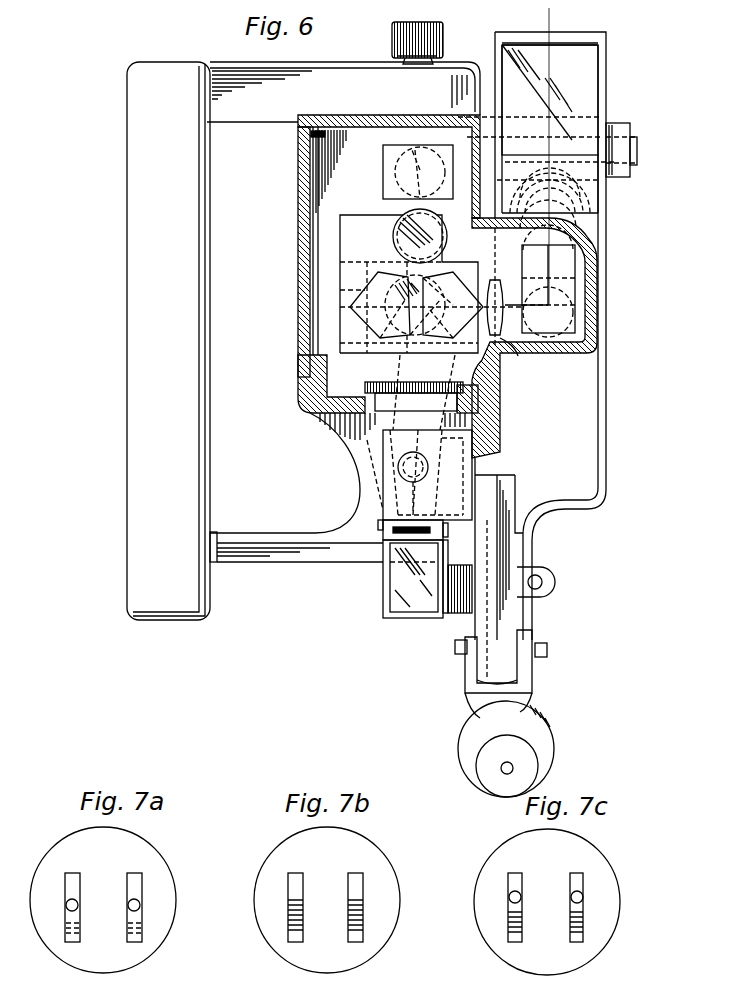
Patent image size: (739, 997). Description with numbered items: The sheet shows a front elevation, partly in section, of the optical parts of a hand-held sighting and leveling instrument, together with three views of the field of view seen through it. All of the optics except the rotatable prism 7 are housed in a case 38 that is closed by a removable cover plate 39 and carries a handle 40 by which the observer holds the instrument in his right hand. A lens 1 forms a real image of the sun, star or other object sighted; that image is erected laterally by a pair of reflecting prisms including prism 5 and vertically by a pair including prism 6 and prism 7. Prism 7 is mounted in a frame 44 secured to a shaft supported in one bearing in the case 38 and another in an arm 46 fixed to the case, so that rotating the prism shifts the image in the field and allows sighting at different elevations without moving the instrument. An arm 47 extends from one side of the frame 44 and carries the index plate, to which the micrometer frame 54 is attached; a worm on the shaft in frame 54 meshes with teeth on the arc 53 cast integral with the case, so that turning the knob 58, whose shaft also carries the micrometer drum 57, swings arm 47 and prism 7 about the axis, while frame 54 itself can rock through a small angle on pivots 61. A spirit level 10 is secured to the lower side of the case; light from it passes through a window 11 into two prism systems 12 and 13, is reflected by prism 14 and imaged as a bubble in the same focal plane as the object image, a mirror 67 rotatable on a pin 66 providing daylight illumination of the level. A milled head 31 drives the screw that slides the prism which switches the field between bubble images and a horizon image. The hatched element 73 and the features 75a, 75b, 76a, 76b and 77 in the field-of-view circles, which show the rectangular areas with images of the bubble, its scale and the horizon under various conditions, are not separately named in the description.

In FIG. 6, the lens 1 is at (515, 355).
In FIG. 6, the reflecting prism 5 is at (562, 318).
In FIG. 6, the reflecting prism 6 is at (563, 273).
In FIG. 6, the reflecting prism 7 is at (585, 85).
In FIG. 6, the spirit level 10 is at (410, 467).
In FIG. 6, the window 11 is at (405, 383).
In FIG. 6, the prism system 12 is at (455, 270).
In FIG. 6, the prism system 13 is at (340, 283).
In FIG. 6, the prism 14 is at (383, 170).
In FIG. 6, the milled head 31 is at (445, 34).
In FIG. 6, the case 38 is at (347, 73).
In FIG. 6, the removable cover plate 39 is at (300, 318).
In FIG. 6, the handle 40 is at (180, 385).
In FIG. 6, the frame 44 is at (606, 52).
In FIG. 6, the arm 46 is at (630, 136).
In FIG. 6, the arm 47 is at (600, 505).
In FIG. 6, the arc 53 is at (505, 625).
In FIG. 6, the micrometer frame 54 is at (530, 690).
In FIG. 6, the micrometer drum 57 is at (530, 728).
In FIG. 6, the knob 58 is at (528, 768).
In FIG. 6, the pivots 61 is at (455, 648).
In FIG. 6, the pin 66 is at (380, 527).
In FIG. 6, the mirror 67 is at (393, 600).
In FIG. 6, the reflector 73 is at (600, 197).
In FIG. 7A, the left slot 75a is at (73, 870).
In FIG. 7B, the left slot 75a is at (295, 870).
In FIG. 7C, the left slot 75a is at (518, 850).
In FIG. 7A, the right slot 75b is at (137, 870).
In FIG. 7B, the right slot 75b is at (355, 870).
In FIG. 7C, the right slot 75b is at (578, 868).
In FIG. 7A, the left aperture 76a is at (70, 910).
In FIG. 7C, the left aperture 76a is at (512, 898).
In FIG. 7A, the right aperture 76b is at (142, 906).
In FIG. 7C, the right aperture 76b is at (583, 897).
In FIG. 7B, the grating 77 is at (293, 912).
In FIG. 7C, the grating 77 is at (583, 922).